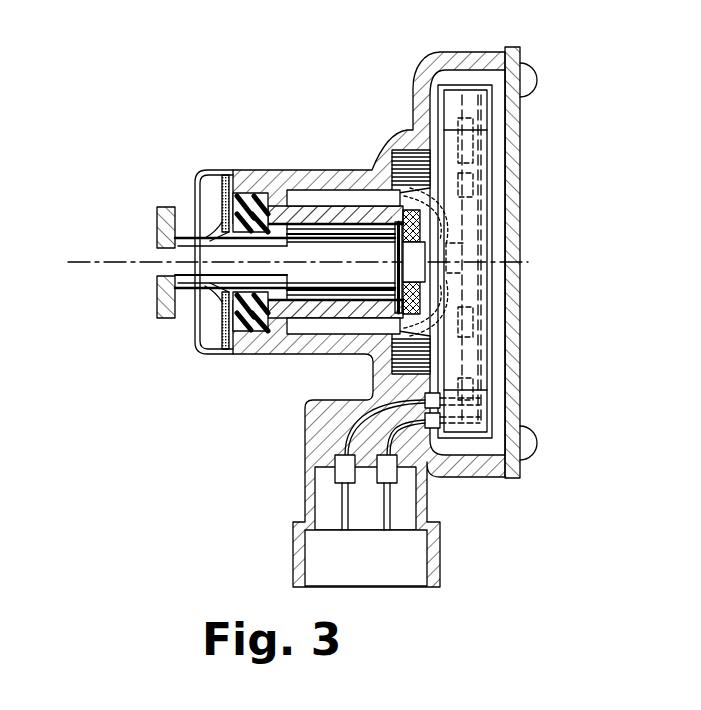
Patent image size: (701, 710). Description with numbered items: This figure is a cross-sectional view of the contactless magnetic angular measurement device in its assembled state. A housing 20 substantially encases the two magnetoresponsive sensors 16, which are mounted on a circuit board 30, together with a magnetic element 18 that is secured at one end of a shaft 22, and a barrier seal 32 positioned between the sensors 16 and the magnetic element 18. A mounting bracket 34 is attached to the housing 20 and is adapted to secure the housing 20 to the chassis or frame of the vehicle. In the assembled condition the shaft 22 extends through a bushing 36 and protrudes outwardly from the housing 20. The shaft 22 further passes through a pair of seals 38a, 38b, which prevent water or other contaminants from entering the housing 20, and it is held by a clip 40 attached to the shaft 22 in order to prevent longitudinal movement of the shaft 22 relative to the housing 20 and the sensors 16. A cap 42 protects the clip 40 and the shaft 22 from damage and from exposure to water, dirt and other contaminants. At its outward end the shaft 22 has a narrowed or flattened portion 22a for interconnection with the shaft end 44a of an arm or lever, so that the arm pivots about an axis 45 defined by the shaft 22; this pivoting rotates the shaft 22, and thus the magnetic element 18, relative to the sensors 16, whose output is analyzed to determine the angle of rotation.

The magnetoresponsive sensors 16 is at (443, 268).
The magnetic element 18 is at (420, 232).
The housing 20 is at (315, 405).
The shaft 22 is at (207, 272).
The narrowed or flattened portion 22a is at (167, 258).
The circuit board 30 is at (490, 325).
The barrier seal 32 is at (374, 172).
The mounting bracket 34 is at (518, 143).
The bushing 36 is at (343, 302).
The seal 38a is at (270, 188).
The seal 38b is at (232, 190).
The clip 40 is at (223, 178).
The cap 42 is at (194, 178).
The shaft end 44a is at (167, 228).
The axis 45 is at (85, 263).